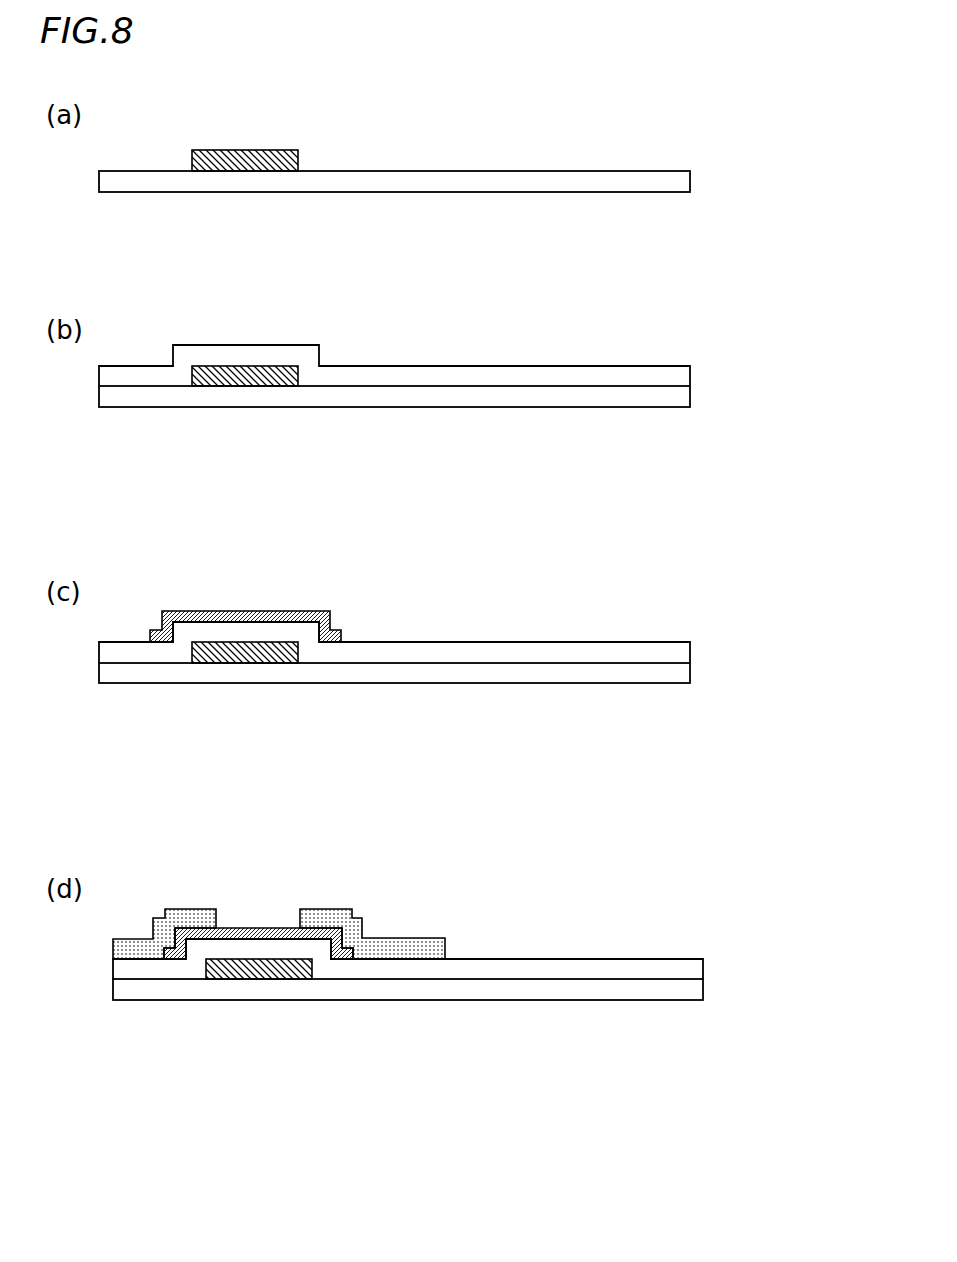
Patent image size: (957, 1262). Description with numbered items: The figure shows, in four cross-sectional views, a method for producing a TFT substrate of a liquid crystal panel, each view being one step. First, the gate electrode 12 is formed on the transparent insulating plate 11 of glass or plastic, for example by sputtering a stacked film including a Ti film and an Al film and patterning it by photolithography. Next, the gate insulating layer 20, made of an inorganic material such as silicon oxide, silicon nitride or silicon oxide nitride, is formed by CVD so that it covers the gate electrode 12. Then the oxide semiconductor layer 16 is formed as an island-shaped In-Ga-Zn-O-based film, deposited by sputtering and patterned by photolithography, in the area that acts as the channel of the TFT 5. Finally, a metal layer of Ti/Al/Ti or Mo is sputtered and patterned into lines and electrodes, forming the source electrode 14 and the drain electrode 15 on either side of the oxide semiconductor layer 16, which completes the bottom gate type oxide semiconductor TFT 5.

The TFT 5 is at (264, 882).
The transparent insulating plate 11 is at (683, 183).
The gate electrode 12 is at (278, 158).
The source electrode 14 is at (177, 913).
The drain electrode 15 is at (411, 940).
The oxide semiconductor layer 16 is at (300, 611).
The gate insulating layer 20 is at (681, 376).